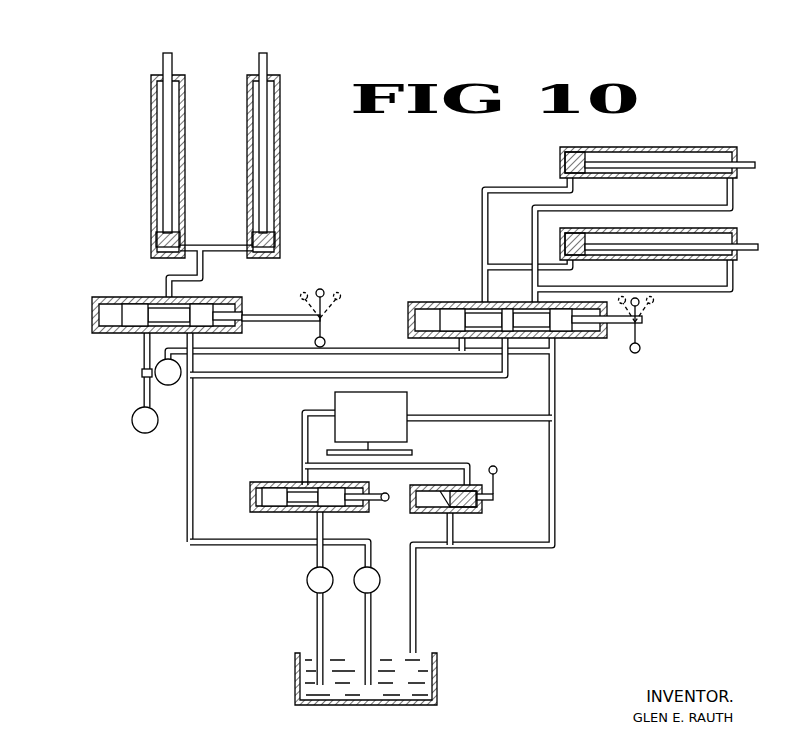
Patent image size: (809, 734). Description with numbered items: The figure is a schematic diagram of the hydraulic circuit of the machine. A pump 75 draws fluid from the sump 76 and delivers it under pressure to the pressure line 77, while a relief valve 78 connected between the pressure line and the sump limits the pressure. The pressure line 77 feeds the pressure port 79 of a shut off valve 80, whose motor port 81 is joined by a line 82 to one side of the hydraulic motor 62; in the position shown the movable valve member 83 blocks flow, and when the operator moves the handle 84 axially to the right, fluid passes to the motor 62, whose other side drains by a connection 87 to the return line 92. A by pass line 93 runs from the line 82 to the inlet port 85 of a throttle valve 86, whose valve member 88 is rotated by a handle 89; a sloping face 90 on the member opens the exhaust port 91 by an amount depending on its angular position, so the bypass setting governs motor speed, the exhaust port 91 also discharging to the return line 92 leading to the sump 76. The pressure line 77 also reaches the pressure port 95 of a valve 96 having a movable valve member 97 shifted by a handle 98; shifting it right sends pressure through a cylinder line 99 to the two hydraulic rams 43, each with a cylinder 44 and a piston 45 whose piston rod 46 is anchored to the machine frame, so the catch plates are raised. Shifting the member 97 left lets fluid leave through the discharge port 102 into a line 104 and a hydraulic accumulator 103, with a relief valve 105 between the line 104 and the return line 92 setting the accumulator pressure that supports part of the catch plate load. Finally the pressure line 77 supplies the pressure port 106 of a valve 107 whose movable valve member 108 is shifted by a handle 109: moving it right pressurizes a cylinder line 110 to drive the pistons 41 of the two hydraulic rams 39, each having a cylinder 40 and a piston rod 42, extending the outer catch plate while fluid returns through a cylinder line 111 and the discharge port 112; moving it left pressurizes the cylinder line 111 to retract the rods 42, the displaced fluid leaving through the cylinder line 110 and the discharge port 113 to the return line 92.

The hydraulic ram 39 is at (562, 225).
The cylinder 40 is at (633, 198).
The piston 41 is at (578, 238).
The piston rod 42 is at (688, 170).
The hydraulic ram 43 is at (213, 134).
The cylinder 44 is at (247, 166).
The piston 45 is at (248, 238).
The piston rod 46 is at (166, 108).
The hydraulic motor 62 is at (369, 423).
The pump 75 is at (318, 582).
The sump 76 is at (294, 680).
The pressure line 77 is at (472, 378).
The relief valve 78 is at (365, 582).
The pressure port 79 is at (325, 514).
The shut off valve 80 is at (256, 496).
The motor port 81 is at (306, 482).
The line 82 is at (302, 413).
The movable valve member 83 is at (278, 506).
The handle 84 is at (386, 502).
The inlet port 85 is at (486, 466).
The throttle valve 86 is at (482, 512).
The conduit 87 is at (438, 421).
The valve member 88 is at (441, 510).
The handle 89 is at (496, 490).
The sloping face 90 is at (466, 474).
The exhaust port 91 is at (455, 520).
The return line 92 is at (336, 350).
The by pass line 93 is at (325, 465).
The pressure port 95 is at (200, 335).
The valve 96 is at (98, 313).
The movable valve member 97 is at (133, 305).
The handle 98 is at (341, 290).
The cylinder line 99 is at (168, 278).
The discharge port 102 is at (145, 336).
The hydraulic accumulator 103 is at (134, 414).
The line 104 is at (141, 374).
The relief valve 105 is at (176, 383).
The pressure port 106 is at (512, 340).
The valve 107 is at (408, 316).
The movable valve member 108 is at (455, 308).
The handle 109 is at (648, 332).
The cylinder line 110 is at (482, 198).
The cylinder line 111 is at (533, 224).
The discharge port 112 is at (560, 338).
The discharge port 113 is at (460, 340).